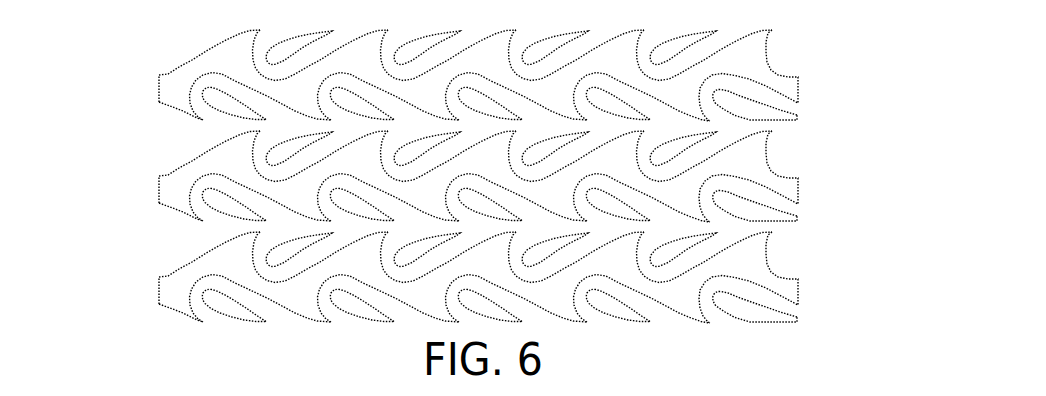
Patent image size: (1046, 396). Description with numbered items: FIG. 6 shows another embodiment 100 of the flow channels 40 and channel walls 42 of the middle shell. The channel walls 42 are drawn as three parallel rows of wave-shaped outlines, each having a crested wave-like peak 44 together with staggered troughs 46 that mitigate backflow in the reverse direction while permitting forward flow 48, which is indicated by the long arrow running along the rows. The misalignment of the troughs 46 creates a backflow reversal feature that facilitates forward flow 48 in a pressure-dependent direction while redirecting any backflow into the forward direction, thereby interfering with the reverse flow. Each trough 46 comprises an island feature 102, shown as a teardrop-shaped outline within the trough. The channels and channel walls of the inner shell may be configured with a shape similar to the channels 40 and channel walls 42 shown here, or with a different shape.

The embodiment of flow channels and channel walls 100 is at (501, 161).
The flow channels 40 is at (559, 64).
The channel walls 42 is at (751, 60).
The crested wave-like peak 44 is at (382, 28).
The staggered troughs 46 is at (588, 87).
The forward flow 48 is at (818, 223).
The island feature 102 is at (724, 91).